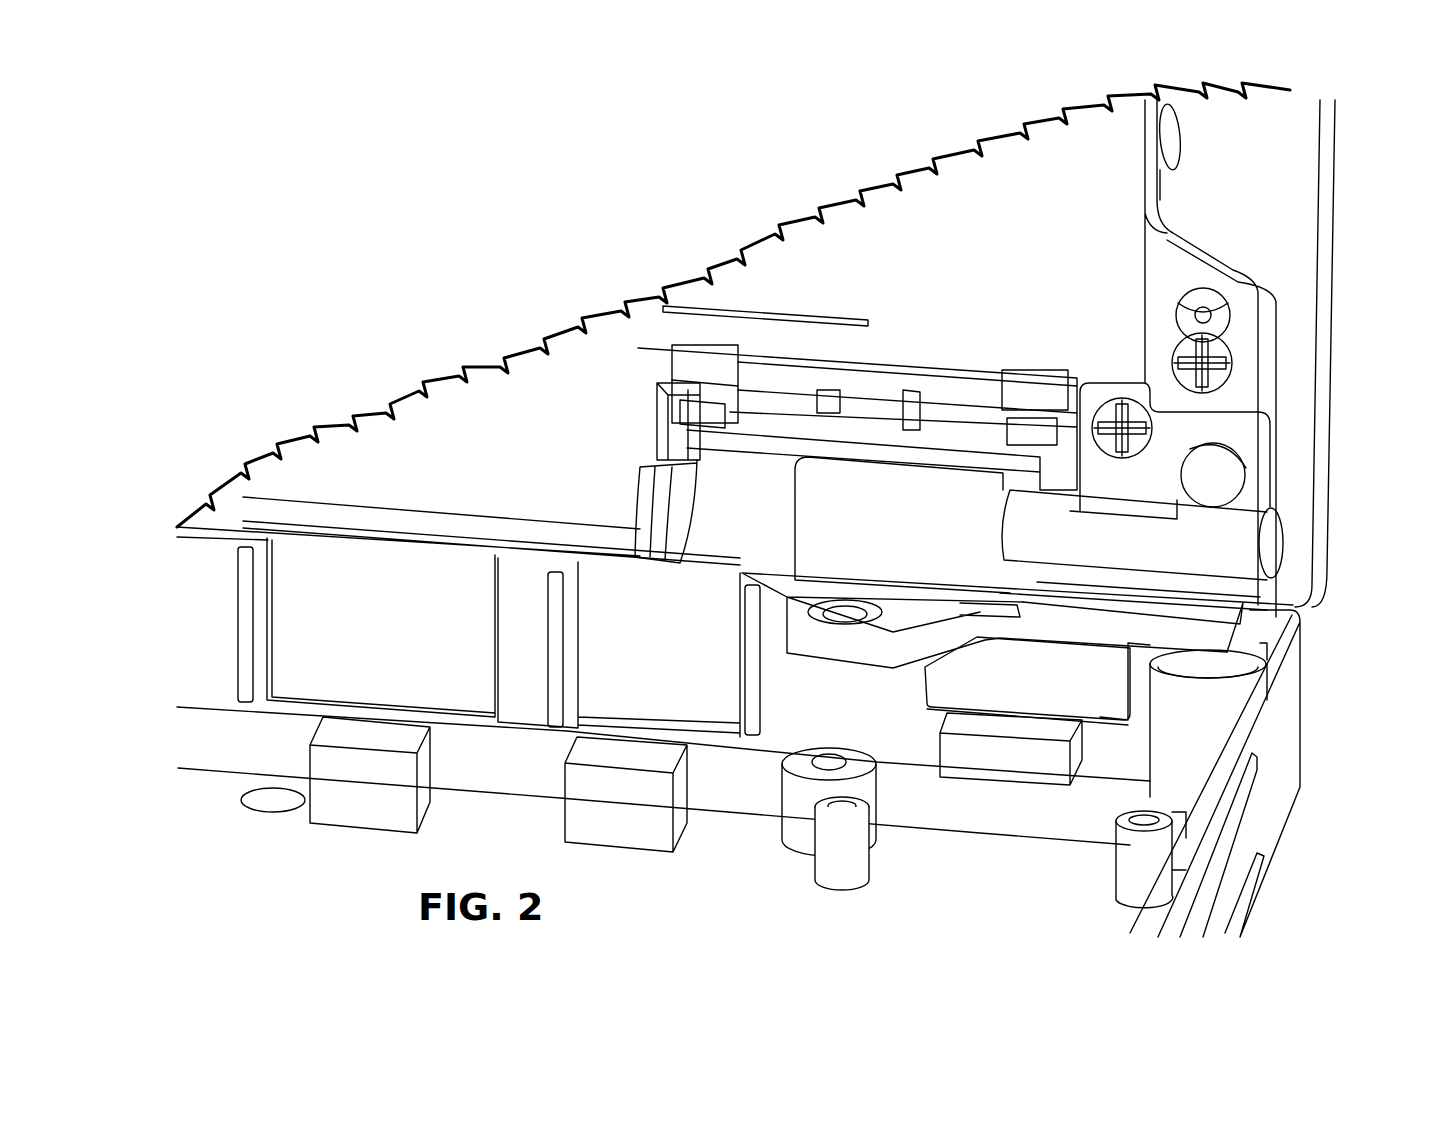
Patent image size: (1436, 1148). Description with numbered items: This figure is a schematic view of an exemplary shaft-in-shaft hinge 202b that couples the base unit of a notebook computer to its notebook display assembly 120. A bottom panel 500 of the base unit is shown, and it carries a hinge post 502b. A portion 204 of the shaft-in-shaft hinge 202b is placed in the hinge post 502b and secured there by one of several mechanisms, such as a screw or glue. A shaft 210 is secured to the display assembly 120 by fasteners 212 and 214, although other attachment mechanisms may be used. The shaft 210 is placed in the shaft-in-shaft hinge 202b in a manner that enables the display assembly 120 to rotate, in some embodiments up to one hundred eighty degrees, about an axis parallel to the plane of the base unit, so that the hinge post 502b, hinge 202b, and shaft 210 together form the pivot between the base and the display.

The notebook display assembly 120 is at (1305, 285).
The fastener 214 is at (1110, 383).
The shaft-in-shaft hinge 202b is at (950, 500).
The fastener 212 is at (1236, 476).
The shaft 210 is at (1235, 537).
The portion of the shaft-in-shaft hinge 204 is at (1233, 658).
The hinge post 502b is at (1232, 687).
The bottom panel 500 is at (1275, 765).